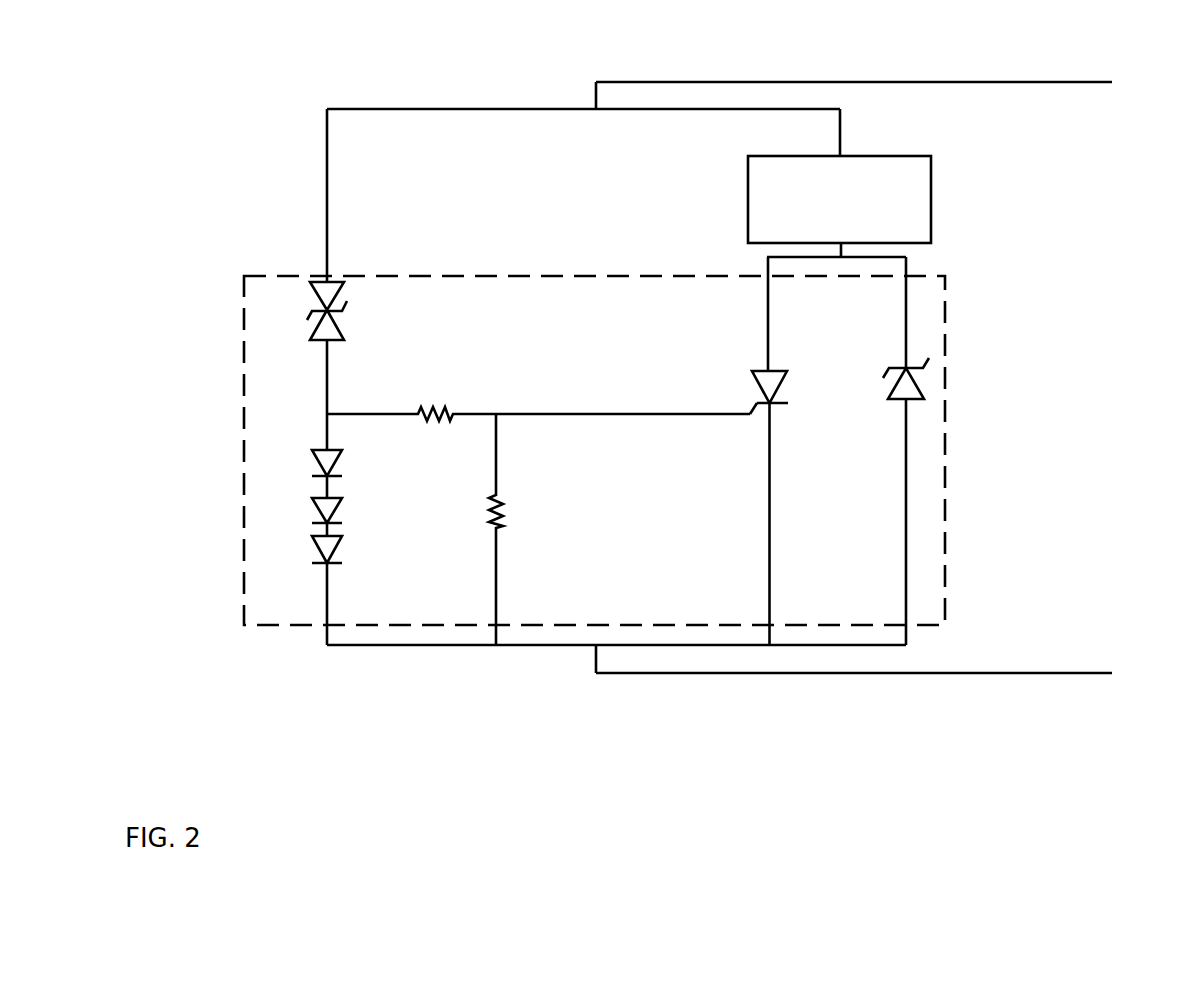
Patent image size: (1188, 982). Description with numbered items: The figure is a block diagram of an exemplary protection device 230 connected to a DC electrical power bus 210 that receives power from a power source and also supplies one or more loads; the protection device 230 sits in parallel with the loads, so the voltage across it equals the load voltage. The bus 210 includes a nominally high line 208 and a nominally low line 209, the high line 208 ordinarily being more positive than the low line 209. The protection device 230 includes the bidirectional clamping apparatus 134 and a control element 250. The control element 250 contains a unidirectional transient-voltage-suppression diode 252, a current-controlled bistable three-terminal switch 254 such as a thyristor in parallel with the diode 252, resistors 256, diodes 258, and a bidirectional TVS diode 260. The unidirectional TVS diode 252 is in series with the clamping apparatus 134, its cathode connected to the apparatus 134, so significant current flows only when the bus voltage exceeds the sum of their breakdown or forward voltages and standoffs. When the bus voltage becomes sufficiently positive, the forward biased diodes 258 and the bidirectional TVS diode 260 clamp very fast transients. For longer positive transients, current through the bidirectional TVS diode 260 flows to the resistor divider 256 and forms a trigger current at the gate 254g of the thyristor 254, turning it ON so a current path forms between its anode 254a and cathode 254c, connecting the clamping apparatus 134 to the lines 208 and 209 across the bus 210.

The bidirectional clamping apparatus 134 is at (931, 186).
The nominally high line 208 is at (597, 95).
The nominally low line 209 is at (596, 658).
The DC electrical power bus 210 is at (855, 82).
The protection device 230 is at (268, 195).
The control element 250 is at (947, 498).
The unidirectional transient-voltage-suppression diode 252 is at (903, 403).
The switch 254 is at (755, 376).
The anode 254a is at (768, 347).
The gate 254g is at (757, 403).
The cathode 254c is at (768, 420).
The resistors 256 is at (432, 418).
The diodes 258 is at (352, 517).
The bidirectional TVS diode 260 is at (340, 292).